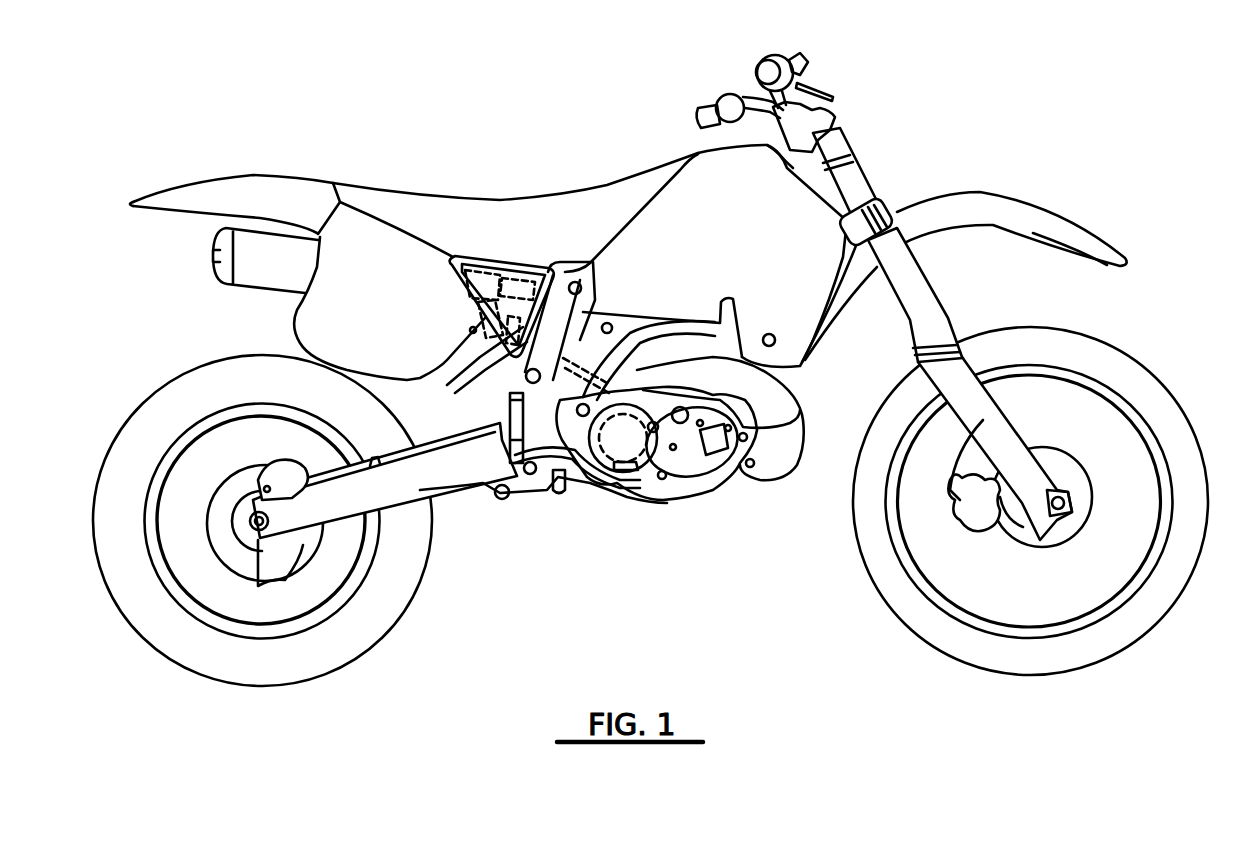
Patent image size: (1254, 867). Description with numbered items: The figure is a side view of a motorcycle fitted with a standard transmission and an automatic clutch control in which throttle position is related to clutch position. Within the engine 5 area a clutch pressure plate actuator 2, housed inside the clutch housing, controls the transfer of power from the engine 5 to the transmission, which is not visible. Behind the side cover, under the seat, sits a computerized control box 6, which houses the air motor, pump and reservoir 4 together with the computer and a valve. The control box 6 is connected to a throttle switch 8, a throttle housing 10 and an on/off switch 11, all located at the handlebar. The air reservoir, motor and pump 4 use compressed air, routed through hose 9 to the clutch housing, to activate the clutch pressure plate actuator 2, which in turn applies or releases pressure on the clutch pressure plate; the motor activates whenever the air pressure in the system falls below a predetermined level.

The clutch pressure plate actuator 2 is at (620, 447).
The air motor, pump and reservoir 4 is at (497, 268).
The engine 5 is at (700, 468).
The computerized control box 6 is at (488, 246).
The throttle switch 8 is at (785, 50).
The hose 9 is at (655, 422).
The throttle housing 10 is at (756, 47).
The on/off switch 11 is at (816, 66).